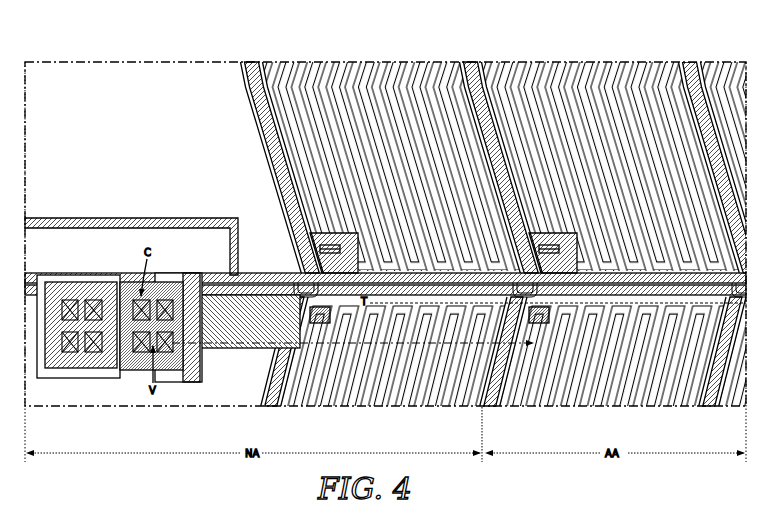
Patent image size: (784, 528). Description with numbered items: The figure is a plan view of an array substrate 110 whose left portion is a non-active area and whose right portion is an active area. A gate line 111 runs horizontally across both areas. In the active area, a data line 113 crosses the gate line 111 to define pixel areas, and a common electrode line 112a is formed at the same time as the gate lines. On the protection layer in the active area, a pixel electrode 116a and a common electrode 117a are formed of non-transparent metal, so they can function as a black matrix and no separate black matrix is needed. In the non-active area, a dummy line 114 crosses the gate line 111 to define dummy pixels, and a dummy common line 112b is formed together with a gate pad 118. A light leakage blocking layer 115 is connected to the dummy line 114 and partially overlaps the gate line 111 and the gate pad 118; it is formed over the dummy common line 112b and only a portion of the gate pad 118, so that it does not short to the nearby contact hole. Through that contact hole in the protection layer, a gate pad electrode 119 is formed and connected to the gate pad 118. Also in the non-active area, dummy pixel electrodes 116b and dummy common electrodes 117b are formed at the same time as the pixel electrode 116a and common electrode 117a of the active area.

The array substrate 110 is at (695, 41).
The gate line 111 is at (405, 296).
The common electrode line 112a is at (480, 404).
The dummy common line 112b is at (262, 404).
The data line 113 is at (525, 148).
The dummy line 114 is at (247, 167).
The light leakage blocking layer 115 is at (233, 328).
The pixel electrode 116a is at (522, 65).
The dummy pixel electrode 116b is at (247, 74).
The common electrode 117a is at (567, 63).
The dummy common electrode 117b is at (249, 97).
The gate pad 118 is at (137, 372).
The gate pad electrode 119 is at (96, 378).